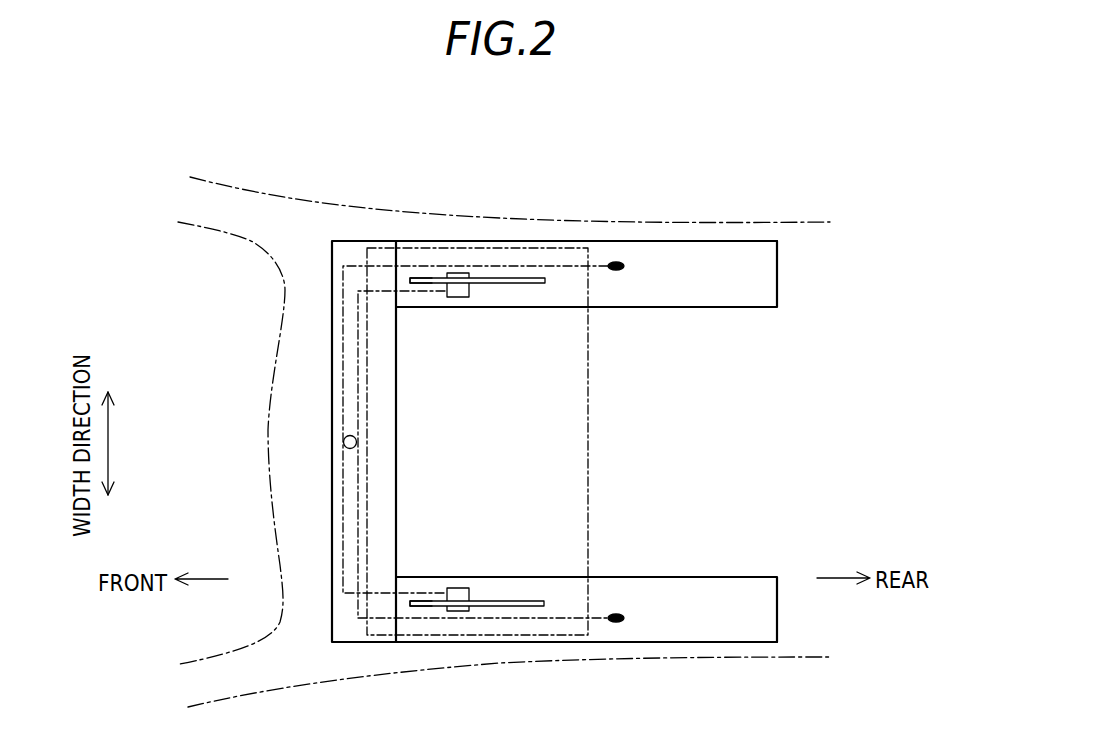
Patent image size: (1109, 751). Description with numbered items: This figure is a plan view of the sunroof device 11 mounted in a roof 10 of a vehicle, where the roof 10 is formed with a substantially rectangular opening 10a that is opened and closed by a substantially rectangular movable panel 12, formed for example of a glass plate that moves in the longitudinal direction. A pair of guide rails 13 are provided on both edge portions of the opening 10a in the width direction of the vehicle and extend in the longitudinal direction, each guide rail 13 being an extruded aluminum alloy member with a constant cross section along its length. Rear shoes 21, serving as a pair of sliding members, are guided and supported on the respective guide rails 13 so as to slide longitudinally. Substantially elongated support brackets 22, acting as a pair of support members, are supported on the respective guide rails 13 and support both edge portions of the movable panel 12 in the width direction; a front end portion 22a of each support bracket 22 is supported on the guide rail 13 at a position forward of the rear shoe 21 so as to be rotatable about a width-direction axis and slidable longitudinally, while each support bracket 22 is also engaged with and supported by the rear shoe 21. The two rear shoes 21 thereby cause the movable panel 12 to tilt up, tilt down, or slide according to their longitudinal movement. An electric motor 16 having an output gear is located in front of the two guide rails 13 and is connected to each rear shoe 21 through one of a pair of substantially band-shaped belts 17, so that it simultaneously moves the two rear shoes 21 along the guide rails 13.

The roof 10 is at (583, 662).
The opening 10a is at (545, 414).
The sunroof device 11 is at (702, 216).
The movable panel 12 is at (588, 445).
The guide rail 13 is at (540, 241).
The electric motor 16 is at (345, 448).
The belt 17 is at (343, 517).
The rear shoe 21 is at (459, 297).
The support bracket 22 is at (517, 283).
The front end portion 22a is at (420, 285).